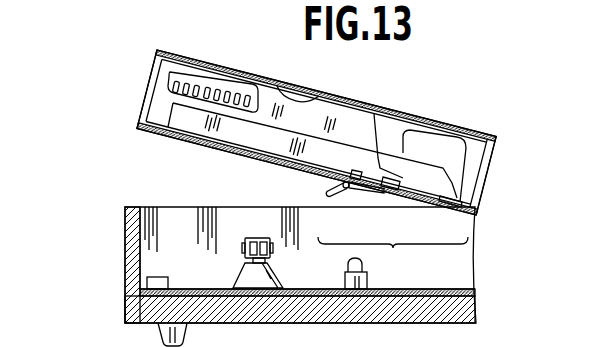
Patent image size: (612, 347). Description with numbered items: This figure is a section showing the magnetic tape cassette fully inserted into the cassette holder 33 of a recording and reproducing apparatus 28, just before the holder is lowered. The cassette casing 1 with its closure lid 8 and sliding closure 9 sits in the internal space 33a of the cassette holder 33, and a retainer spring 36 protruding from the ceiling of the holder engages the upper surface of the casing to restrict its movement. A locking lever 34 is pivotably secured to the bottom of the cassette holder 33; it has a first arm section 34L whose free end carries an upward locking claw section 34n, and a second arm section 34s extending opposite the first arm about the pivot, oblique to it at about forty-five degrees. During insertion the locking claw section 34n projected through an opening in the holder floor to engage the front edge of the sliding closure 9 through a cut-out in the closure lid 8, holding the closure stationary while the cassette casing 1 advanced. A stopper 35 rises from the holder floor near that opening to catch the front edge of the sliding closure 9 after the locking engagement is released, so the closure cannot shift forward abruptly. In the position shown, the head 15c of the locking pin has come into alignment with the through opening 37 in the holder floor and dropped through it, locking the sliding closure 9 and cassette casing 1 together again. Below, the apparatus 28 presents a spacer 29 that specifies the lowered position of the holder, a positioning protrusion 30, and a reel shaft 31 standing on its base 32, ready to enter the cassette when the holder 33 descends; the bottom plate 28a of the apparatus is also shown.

The cassette casing 1 is at (413, 120).
The closure lid 8 is at (457, 148).
The sliding closure 9 is at (205, 128).
The head of the locking pin 15c is at (358, 175).
The recording and reproducing apparatus 28 is at (125, 262).
The bottom plate 28a is at (477, 290).
The spacer 29 is at (163, 277).
The positioning protrusion 30 is at (348, 265).
The reel shaft 31 is at (242, 238).
The base of the reel shaft 32 is at (277, 279).
The cassette holder 33 is at (263, 76).
The internal space of the cassette holder 33a is at (155, 62).
The locking lever 34 is at (393, 254).
The second arm section 34s is at (337, 198).
The first arm section 34L is at (363, 190).
The locking claw section 34n is at (390, 188).
The stopper 35 is at (460, 203).
The retainer spring 36 is at (305, 95).
The through opening 37 is at (368, 175).